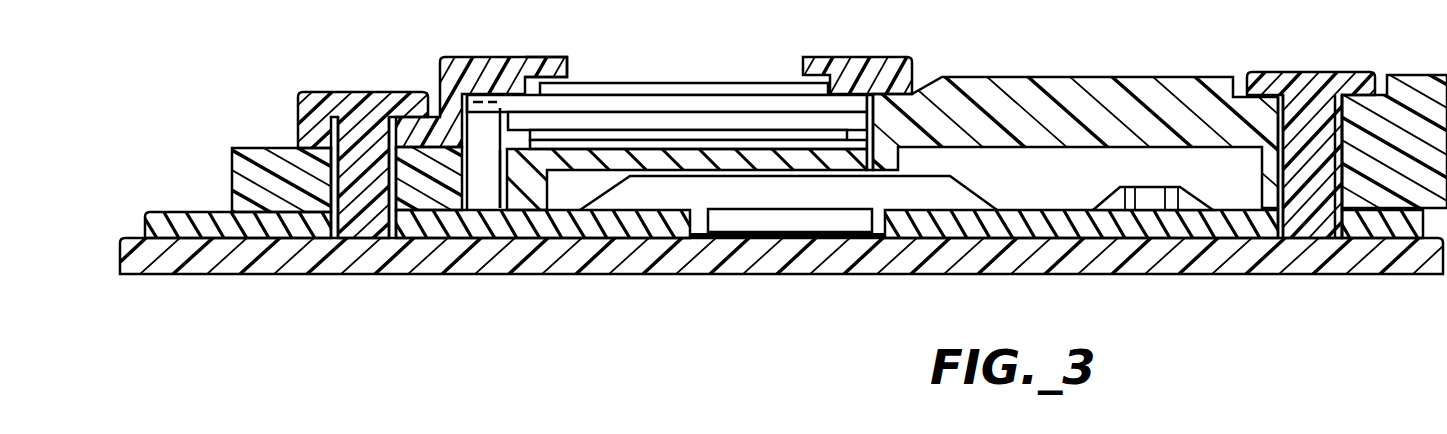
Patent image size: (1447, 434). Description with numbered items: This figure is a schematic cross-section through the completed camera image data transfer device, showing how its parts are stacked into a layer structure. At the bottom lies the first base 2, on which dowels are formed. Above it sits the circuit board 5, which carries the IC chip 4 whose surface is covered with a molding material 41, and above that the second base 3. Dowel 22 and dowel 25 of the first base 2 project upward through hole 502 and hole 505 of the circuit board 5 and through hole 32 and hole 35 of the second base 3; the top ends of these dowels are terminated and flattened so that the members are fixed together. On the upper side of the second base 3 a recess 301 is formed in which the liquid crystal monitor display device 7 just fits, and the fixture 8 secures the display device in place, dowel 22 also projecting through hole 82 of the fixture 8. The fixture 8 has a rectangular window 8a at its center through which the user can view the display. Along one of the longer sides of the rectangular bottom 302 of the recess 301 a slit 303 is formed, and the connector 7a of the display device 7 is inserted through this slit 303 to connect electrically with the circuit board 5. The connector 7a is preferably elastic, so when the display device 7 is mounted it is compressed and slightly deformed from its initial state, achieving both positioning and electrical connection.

The first base 2 is at (590, 265).
The second base 3 is at (1082, 97).
The IC chip 4 is at (833, 230).
The circuit board 5 is at (1002, 228).
The liquid crystal monitor display device 7 is at (630, 98).
The connector 7a is at (478, 182).
The fixture 8 is at (468, 72).
The rectangular window 8a is at (568, 68).
The dowel 22 is at (378, 102).
The dowel 25 is at (1290, 80).
The through hole 32 is at (297, 150).
The through hole 35 is at (1300, 175).
The molding material 41 is at (710, 207).
The through hole 82 is at (340, 103).
The recess 301 is at (877, 117).
The rectangular bottom 302 is at (708, 155).
The slit 303 is at (497, 202).
The through hole 502 is at (386, 232).
The through hole 505 is at (1283, 175).